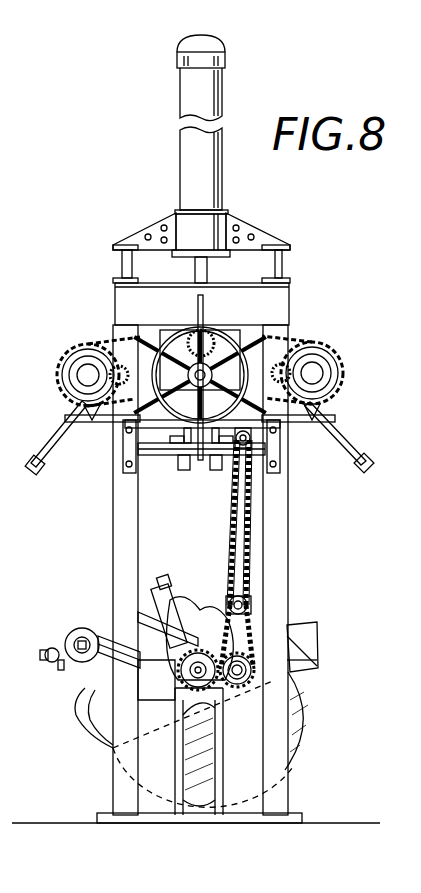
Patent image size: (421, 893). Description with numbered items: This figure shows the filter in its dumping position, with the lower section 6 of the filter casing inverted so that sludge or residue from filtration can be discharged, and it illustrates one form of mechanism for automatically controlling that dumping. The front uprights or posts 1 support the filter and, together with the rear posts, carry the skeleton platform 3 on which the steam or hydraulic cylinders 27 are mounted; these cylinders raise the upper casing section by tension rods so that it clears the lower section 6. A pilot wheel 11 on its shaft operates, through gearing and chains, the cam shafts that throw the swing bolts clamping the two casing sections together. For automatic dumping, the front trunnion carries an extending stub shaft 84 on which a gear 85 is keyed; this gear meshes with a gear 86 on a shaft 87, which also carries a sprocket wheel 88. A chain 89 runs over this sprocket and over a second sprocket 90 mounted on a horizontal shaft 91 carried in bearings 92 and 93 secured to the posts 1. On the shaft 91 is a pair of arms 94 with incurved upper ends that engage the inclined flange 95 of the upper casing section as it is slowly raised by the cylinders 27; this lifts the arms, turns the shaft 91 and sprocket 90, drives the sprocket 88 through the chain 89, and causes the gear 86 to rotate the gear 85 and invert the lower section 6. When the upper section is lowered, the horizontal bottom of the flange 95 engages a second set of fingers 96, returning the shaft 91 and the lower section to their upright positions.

The front uprights or posts 1 is at (122, 781).
The skeleton platform 3 is at (121, 265).
The lower section of the filter casing 6 is at (150, 709).
The pilot wheel 11 is at (219, 323).
The steam or hydraulic cylinders 27 is at (210, 184).
The stub shaft 84 is at (198, 663).
The gear 85 is at (188, 663).
The gear 86 is at (247, 690).
The shaft 87 is at (236, 690).
The sprocket wheel 88 is at (258, 654).
The chain 89 is at (258, 548).
The second sprocket 90 is at (268, 448).
The horizontal shaft 91 is at (162, 455).
The bearing 92 is at (122, 448).
The bearing 93 is at (276, 456).
The arms 94 is at (183, 431).
The inclined flange 95 is at (305, 429).
The second set of fingers 96 is at (216, 471).